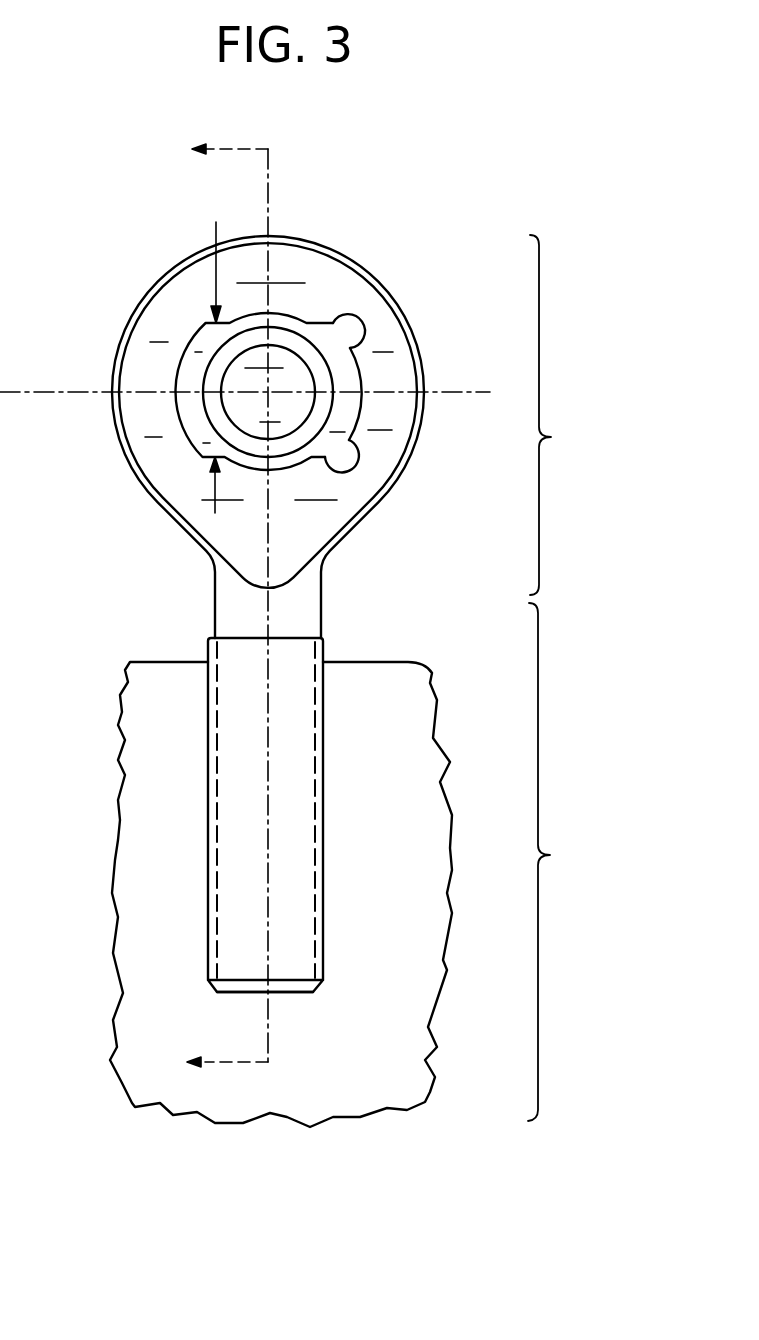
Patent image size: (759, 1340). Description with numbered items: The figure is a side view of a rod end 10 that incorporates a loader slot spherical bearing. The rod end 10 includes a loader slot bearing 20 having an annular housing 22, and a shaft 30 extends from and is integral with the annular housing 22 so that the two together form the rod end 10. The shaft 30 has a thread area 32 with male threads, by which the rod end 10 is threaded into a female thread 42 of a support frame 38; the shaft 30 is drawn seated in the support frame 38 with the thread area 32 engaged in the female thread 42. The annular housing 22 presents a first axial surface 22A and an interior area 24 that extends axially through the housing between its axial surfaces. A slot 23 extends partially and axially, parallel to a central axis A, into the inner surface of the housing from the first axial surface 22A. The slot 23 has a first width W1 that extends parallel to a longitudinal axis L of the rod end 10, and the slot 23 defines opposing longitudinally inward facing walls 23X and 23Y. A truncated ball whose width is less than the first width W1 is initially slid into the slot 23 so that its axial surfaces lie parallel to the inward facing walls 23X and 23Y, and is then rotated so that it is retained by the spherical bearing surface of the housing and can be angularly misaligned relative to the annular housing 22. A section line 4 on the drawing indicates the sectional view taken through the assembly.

The rod end 10 is at (585, 213).
The loader slot bearing 20 is at (557, 415).
The annular housing 22 is at (145, 355).
The first axial surface 22A is at (322, 277).
The slot 23 is at (196, 407).
The inward facing wall 23X is at (348, 348).
The inward facing wall 23Y is at (345, 450).
The interior area 24 is at (208, 427).
The shaft 30 is at (555, 862).
The thread area 32 is at (316, 855).
The support frame 38 is at (393, 1087).
The female thread 42 is at (208, 817).
The section line 4- 4 is at (228, 604).
The central axis A is at (268, 390).
The first width W1 is at (216, 226).
The longitudinal axis L is at (265, 942).